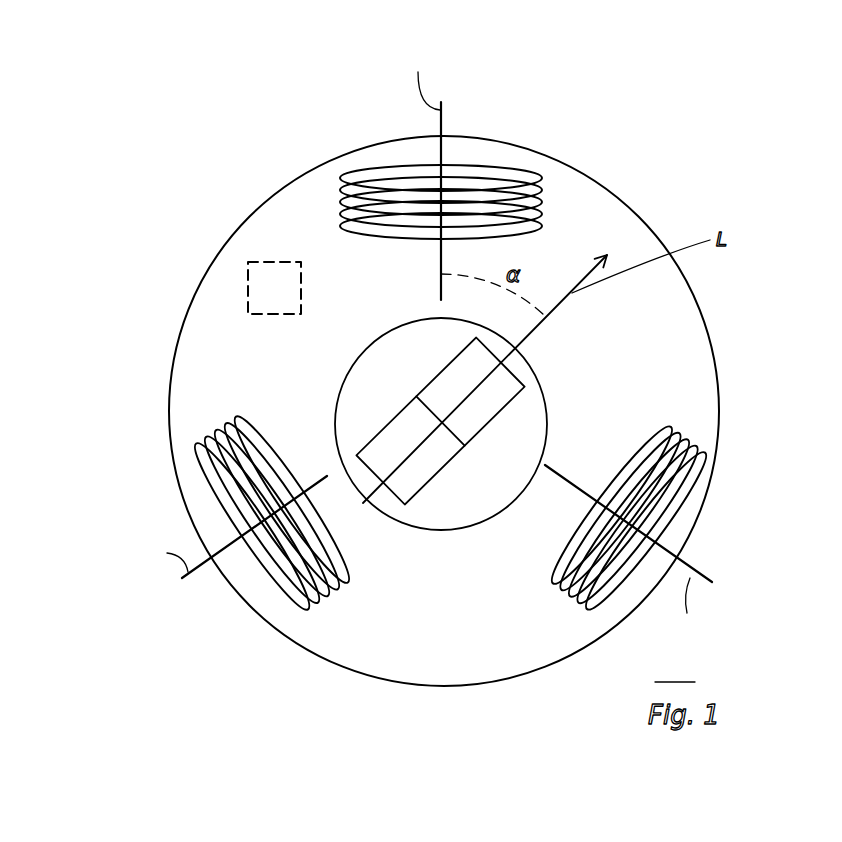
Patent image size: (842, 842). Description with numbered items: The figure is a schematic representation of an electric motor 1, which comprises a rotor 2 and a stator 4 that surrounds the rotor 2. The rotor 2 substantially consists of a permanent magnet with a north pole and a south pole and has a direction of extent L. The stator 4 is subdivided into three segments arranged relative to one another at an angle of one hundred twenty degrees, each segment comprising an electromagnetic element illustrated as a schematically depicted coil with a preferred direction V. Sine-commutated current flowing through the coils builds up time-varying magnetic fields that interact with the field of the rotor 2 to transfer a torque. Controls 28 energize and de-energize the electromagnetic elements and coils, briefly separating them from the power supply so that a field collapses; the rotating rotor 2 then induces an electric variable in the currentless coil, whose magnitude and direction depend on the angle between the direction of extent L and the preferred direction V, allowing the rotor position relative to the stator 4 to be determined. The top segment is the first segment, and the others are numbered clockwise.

The electric motor 1 is at (713, 140).
The rotor 2 is at (427, 383).
The stator 4 is at (680, 382).
The controls 28 is at (248, 262).